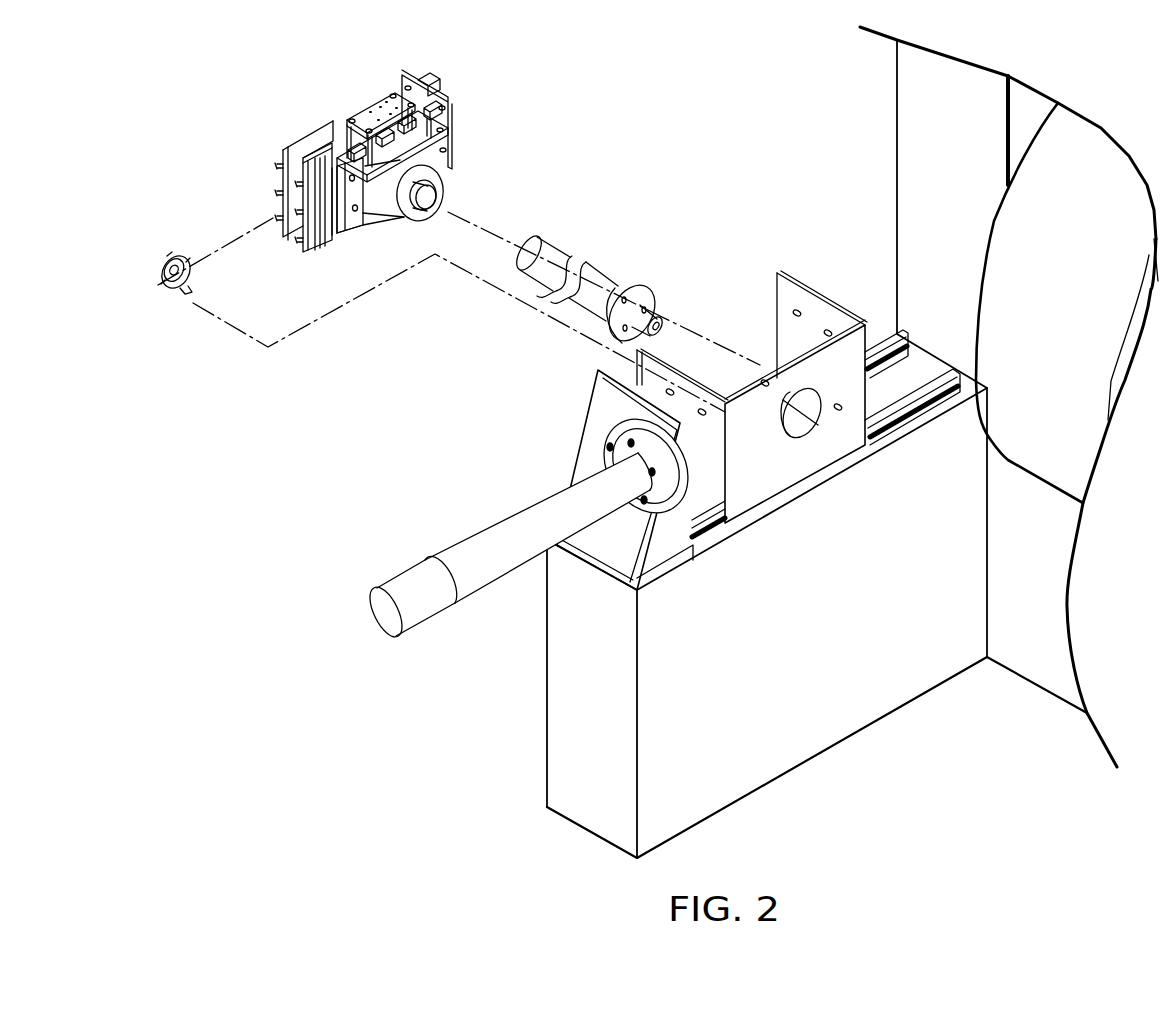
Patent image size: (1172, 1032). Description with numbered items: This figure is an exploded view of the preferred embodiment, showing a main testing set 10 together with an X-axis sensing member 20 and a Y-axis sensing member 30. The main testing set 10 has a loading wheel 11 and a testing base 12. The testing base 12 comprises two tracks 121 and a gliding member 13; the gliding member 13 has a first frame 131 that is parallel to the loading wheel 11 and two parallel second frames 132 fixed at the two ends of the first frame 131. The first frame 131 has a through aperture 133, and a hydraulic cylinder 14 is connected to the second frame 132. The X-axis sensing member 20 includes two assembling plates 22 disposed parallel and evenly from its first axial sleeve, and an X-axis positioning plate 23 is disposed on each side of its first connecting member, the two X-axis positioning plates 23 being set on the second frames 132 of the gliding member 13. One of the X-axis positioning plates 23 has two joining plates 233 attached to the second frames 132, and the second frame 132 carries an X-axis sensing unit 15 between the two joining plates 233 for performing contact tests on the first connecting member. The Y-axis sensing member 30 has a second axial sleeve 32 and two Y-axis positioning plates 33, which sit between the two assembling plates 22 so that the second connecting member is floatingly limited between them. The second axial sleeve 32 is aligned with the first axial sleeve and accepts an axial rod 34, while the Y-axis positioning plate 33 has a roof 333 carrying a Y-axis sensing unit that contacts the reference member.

The main testing set 10 is at (868, 99).
The loading wheel 11 is at (1008, 222).
The testing base 12 is at (560, 688).
The tracks 121 is at (868, 353).
The gliding member 13 is at (789, 395).
The first frame 131 is at (754, 385).
The second frames 132 is at (833, 363).
The through aperture 133 is at (802, 420).
The hydraulic cylinder 14 is at (455, 563).
The X-axis sensing unit 15 is at (175, 262).
The X-axis sensing member 20 is at (245, 161).
The assembling plates 22 is at (357, 227).
The X-axis positioning plates 23 is at (303, 145).
The joining plates 233 is at (284, 177).
The Y-axis sensing member 30 is at (428, 168).
The second axial sleeve 32 is at (440, 185).
The Y-axis positioning plates 33 is at (430, 137).
The roof 333 is at (368, 115).
The axial rod 34 is at (605, 283).